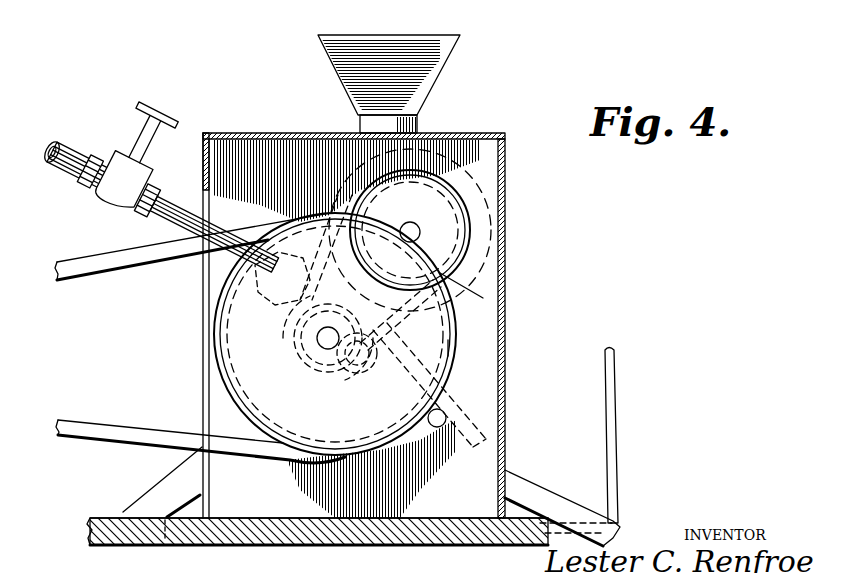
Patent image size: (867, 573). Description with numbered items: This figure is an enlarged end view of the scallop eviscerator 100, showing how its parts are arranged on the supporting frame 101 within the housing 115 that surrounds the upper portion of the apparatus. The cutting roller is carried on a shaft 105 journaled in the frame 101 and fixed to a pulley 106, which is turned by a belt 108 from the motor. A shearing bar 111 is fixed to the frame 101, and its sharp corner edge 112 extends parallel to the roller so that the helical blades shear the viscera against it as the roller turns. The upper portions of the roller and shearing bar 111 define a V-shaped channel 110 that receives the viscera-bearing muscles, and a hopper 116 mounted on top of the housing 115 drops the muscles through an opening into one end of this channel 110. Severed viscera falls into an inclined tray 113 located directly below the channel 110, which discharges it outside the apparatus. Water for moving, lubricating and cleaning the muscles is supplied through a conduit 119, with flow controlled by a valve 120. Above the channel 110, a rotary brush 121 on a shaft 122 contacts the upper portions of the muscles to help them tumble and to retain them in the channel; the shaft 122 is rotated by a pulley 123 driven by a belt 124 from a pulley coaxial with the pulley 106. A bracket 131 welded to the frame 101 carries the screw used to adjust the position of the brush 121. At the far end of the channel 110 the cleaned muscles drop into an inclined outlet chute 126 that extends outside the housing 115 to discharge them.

The scallop eviscerator 100 is at (528, 279).
The supporting frame 101 is at (254, 548).
The shaft 105 is at (325, 343).
The pulley 106 is at (207, 368).
The belt 108 is at (103, 266).
The V-shaped channel 110 is at (380, 350).
The shearing bar 111 is at (445, 346).
The edge 112 is at (342, 368).
The tray 113 is at (176, 476).
The housing 115 is at (505, 367).
The hopper 116 is at (455, 35).
The conduit 119 is at (222, 227).
The valve 120 is at (124, 140).
The rotary brush 121 is at (487, 255).
The shaft 122 is at (409, 222).
The pulley 123 is at (448, 195).
The belt 124 is at (449, 303).
The outlet chute 126 is at (537, 495).
The bracket 131 is at (612, 447).